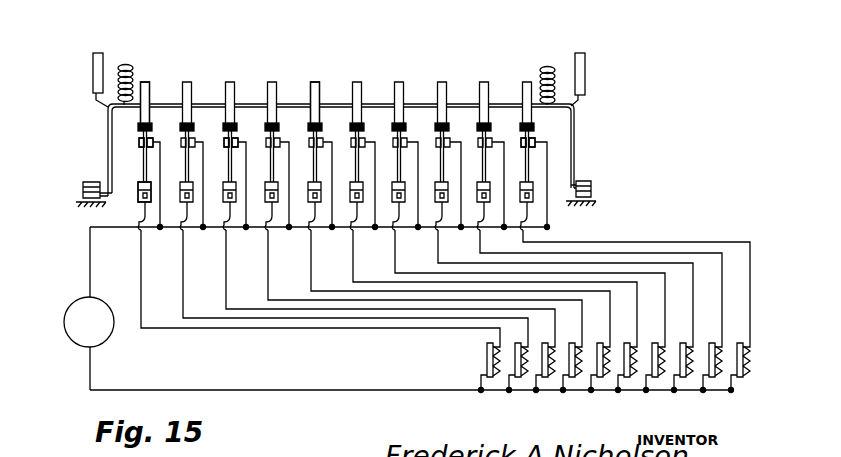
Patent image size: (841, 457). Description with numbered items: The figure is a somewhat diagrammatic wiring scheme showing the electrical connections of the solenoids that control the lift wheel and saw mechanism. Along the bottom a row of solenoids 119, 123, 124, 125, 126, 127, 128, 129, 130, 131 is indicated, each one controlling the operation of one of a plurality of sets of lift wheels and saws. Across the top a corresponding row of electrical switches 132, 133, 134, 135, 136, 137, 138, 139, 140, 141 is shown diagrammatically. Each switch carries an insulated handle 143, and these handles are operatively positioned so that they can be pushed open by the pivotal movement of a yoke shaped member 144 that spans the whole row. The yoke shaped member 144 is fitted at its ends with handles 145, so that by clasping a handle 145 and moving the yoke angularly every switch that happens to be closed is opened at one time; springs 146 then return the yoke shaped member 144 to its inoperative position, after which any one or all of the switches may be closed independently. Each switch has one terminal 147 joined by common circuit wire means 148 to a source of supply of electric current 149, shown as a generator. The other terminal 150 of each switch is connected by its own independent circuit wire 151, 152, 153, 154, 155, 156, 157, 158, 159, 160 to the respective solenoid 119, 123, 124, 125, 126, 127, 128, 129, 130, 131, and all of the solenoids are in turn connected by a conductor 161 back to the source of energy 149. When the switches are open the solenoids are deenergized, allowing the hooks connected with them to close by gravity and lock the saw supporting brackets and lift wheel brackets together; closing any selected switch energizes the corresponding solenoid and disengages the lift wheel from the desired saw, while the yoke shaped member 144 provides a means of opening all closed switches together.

The solenoid 119 is at (488, 352).
The solenoid 123 is at (515, 348).
The solenoid 124 is at (542, 348).
The solenoid 125 is at (569, 348).
The solenoid 126 is at (597, 348).
The solenoid 127 is at (624, 348).
The solenoid 128 is at (652, 348).
The solenoid 129 is at (680, 348).
The solenoid 130 is at (709, 348).
The solenoid 131 is at (745, 358).
The electrical switch 132 is at (140, 160).
The electrical switch 133 is at (172, 157).
The electrical switch 134 is at (216, 157).
The electrical switch 135 is at (258, 157).
The electrical switch 136 is at (301, 157).
The electrical switch 137 is at (343, 157).
The electrical switch 138 is at (385, 157).
The electrical switch 139 is at (428, 157).
The electrical switch 140 is at (470, 157).
The electrical switch 141 is at (513, 157).
The insulated handle 143 is at (148, 80).
The yoke shaped member 144 is at (372, 103).
The handle 145 is at (93, 66).
The spring 146 is at (133, 66).
The terminal 147 is at (137, 143).
The common circuit wire means 148 is at (548, 224).
The source of supply of electric current 149 is at (72, 310).
The terminal 150 is at (138, 200).
The independent circuit wire 151 is at (198, 330).
The independent circuit wire 152 is at (205, 316).
The independent circuit wire 153 is at (248, 307).
The independent circuit wire 154 is at (290, 298).
The independent circuit wire 155 is at (333, 289).
The independent circuit wire 156 is at (375, 280).
The independent circuit wire 157 is at (418, 271).
The independent circuit wire 158 is at (462, 261).
The independent circuit wire 159 is at (505, 251).
The independent circuit wire 160 is at (612, 243).
The conductor 161 is at (360, 393).